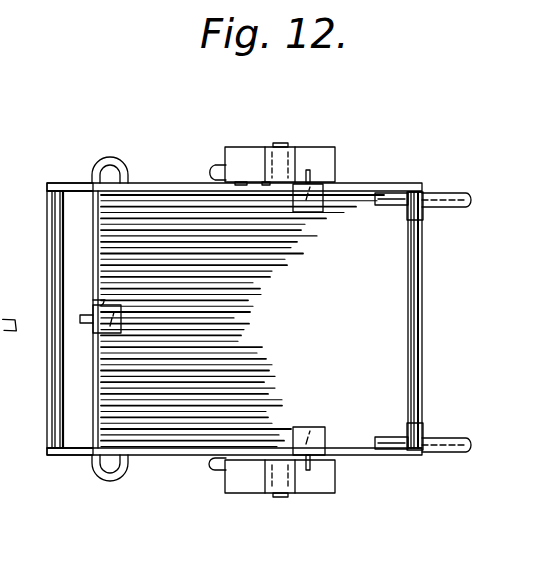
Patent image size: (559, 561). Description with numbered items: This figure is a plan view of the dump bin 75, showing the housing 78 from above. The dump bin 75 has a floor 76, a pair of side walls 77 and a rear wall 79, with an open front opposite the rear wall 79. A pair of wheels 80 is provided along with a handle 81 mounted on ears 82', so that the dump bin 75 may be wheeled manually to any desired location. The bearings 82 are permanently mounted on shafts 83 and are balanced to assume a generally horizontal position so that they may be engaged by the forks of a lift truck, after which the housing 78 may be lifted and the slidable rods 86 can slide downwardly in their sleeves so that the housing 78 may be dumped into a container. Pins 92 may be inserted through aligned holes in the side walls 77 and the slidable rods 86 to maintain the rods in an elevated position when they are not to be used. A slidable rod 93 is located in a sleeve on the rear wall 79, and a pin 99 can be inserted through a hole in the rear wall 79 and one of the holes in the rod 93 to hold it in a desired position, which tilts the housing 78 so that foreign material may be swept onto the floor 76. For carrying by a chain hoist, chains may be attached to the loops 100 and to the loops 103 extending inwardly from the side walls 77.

The dump bin 75 is at (163, 166).
The floor 76 is at (336, 326).
The side walls 77 is at (148, 182).
The housing 78 is at (356, 455).
The rear wall 79 is at (98, 406).
The wheels 80 is at (210, 172).
The handle 81 is at (47, 386).
The bearings 82 is at (277, 317).
The ears 82' is at (64, 318).
The shafts 83 is at (282, 144).
The slidable rods 86 is at (312, 213).
The pins 92 is at (312, 172).
The slidable rod 93 is at (104, 300).
The pin 99 is at (93, 318).
The loops 100 is at (114, 158).
The loops 103 is at (408, 204).